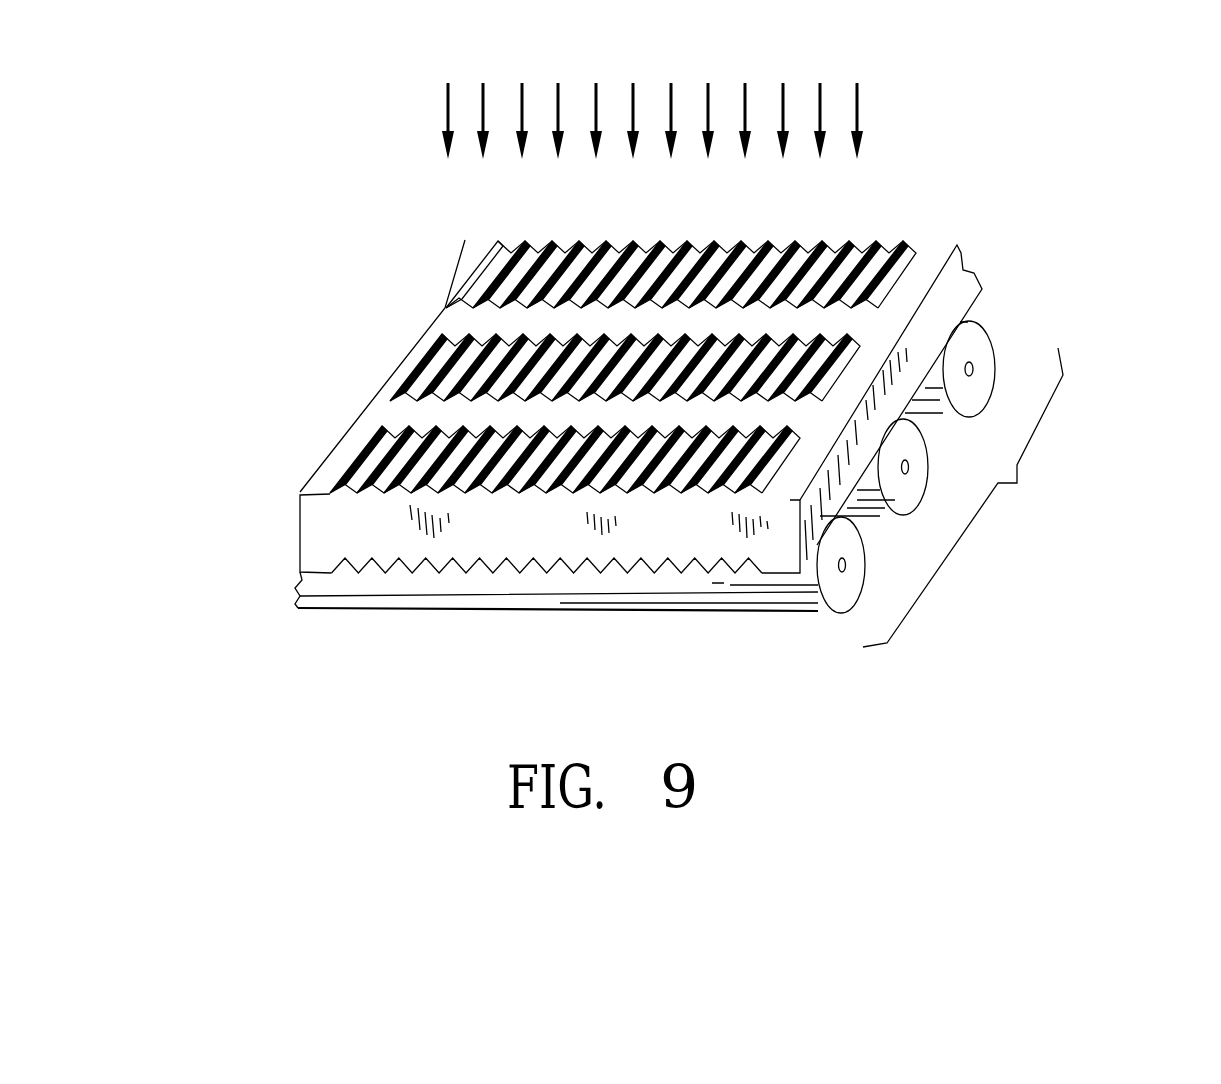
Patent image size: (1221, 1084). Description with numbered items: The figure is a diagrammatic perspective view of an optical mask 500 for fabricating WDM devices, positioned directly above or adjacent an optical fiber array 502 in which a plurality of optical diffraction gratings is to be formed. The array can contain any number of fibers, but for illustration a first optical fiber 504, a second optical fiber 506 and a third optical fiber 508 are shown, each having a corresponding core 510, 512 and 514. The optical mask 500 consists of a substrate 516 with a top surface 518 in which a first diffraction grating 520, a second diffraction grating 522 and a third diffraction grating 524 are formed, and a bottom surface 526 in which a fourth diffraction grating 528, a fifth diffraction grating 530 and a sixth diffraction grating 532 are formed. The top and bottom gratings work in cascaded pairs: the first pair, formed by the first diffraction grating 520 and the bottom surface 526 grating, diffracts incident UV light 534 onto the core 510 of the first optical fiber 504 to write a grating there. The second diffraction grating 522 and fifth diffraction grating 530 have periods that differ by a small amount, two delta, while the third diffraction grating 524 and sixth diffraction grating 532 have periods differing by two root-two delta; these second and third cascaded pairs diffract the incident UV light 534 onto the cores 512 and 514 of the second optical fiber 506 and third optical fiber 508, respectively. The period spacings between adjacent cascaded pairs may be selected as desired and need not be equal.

The optical mask 500 is at (290, 413).
The optical fiber array 502 is at (967, 497).
The first optical fiber 504 is at (843, 583).
The second optical fiber 506 is at (903, 500).
The third optical fiber 508 is at (973, 389).
The core 510 is at (845, 567).
The core 512 is at (907, 470).
The core 514 is at (973, 369).
The substrate 516 is at (310, 530).
The top surface 518 is at (307, 476).
The first diffraction grating 520 is at (367, 442).
The second diffraction grating 522 is at (413, 362).
The third diffraction grating 524 is at (467, 282).
The bottom surface 526 is at (297, 582).
The fourth diffraction grating 528 is at (403, 568).
The fifth diffraction grating 530 is at (930, 403).
The sixth diffraction grating 532 is at (988, 304).
The incident UV light 534 is at (652, 99).